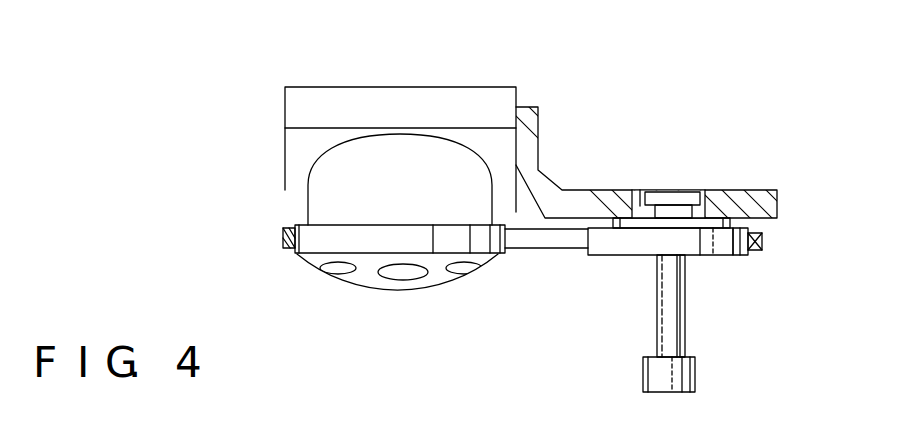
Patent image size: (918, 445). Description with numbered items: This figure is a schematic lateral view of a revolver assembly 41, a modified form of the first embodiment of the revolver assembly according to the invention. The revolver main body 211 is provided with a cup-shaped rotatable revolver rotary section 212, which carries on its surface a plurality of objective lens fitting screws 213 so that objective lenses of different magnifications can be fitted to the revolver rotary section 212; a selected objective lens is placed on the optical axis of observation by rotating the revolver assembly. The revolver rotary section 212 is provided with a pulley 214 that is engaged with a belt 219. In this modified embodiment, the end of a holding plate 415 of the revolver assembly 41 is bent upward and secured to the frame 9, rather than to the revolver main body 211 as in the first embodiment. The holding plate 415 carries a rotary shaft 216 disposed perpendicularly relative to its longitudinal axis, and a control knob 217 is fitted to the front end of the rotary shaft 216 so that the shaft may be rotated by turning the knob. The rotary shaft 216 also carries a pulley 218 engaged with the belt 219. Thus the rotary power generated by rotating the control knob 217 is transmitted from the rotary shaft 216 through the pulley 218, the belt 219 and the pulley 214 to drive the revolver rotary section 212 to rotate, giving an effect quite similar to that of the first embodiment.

The revolver assembly 41 is at (361, 40).
The frame 9 is at (516, 100).
The revolver main body 211 is at (326, 178).
The revolver rotary section 212 is at (326, 257).
The objective lens fitting screws 213 is at (394, 274).
The pulley 214 is at (441, 240).
The belt 219 is at (537, 246).
The holding plate 415 is at (605, 198).
The pulley 218 is at (625, 244).
The rotary shaft 216 is at (670, 292).
The control knob 217 is at (697, 365).